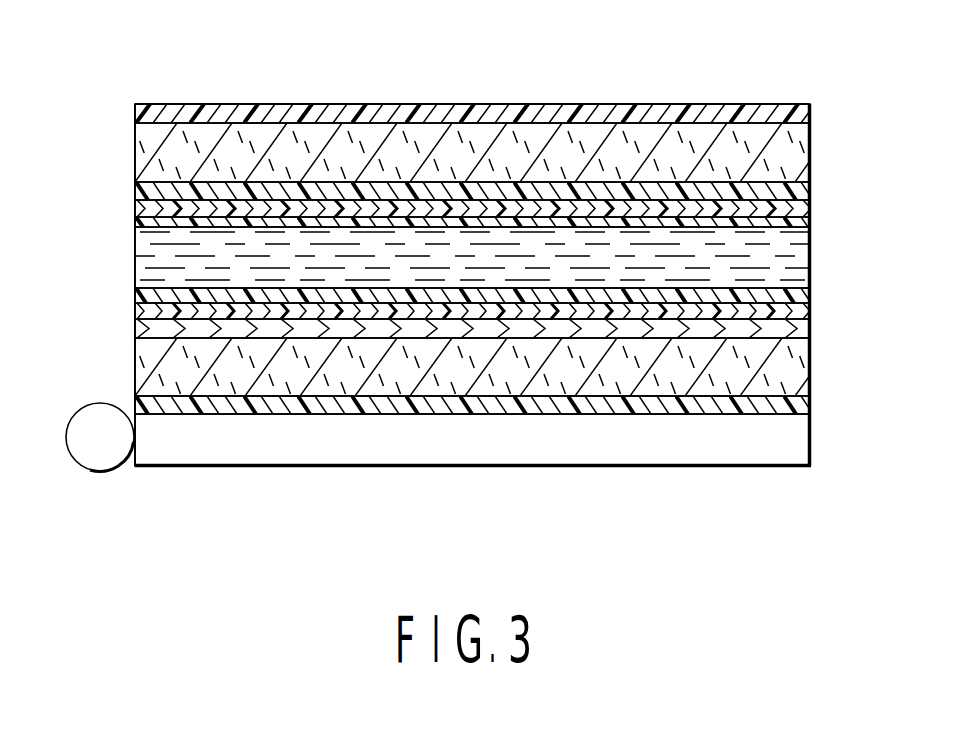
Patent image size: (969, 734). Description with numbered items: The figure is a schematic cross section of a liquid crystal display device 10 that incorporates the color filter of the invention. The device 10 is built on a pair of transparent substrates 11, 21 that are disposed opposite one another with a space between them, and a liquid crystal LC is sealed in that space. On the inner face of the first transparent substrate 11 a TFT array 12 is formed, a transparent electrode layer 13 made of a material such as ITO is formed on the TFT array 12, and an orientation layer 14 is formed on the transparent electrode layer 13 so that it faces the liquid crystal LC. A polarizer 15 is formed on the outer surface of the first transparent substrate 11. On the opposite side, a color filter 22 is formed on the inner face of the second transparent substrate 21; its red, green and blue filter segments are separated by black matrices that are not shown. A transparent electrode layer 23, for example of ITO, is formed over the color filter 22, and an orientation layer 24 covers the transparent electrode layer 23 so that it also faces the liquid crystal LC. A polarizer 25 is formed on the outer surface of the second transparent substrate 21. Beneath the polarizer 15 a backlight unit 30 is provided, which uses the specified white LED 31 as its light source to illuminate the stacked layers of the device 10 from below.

The liquid crystal display device 10 is at (470, 286).
The first transparent substrate 11 is at (812, 369).
The TFT array 12 is at (812, 326).
The transparent electrode layer 13 is at (138, 310).
The orientation layer 14 is at (812, 292).
The polarizer 15 is at (812, 403).
The second transparent substrate 21 is at (141, 150).
The color filter 22 is at (812, 189).
The transparent electrode layer 23 is at (138, 207).
The orientation layer 24 is at (812, 222).
The polarizer 25 is at (811, 108).
The liquid crystal LC is at (138, 262).
The backlight unit 30 is at (519, 470).
The white LED 31 is at (76, 447).